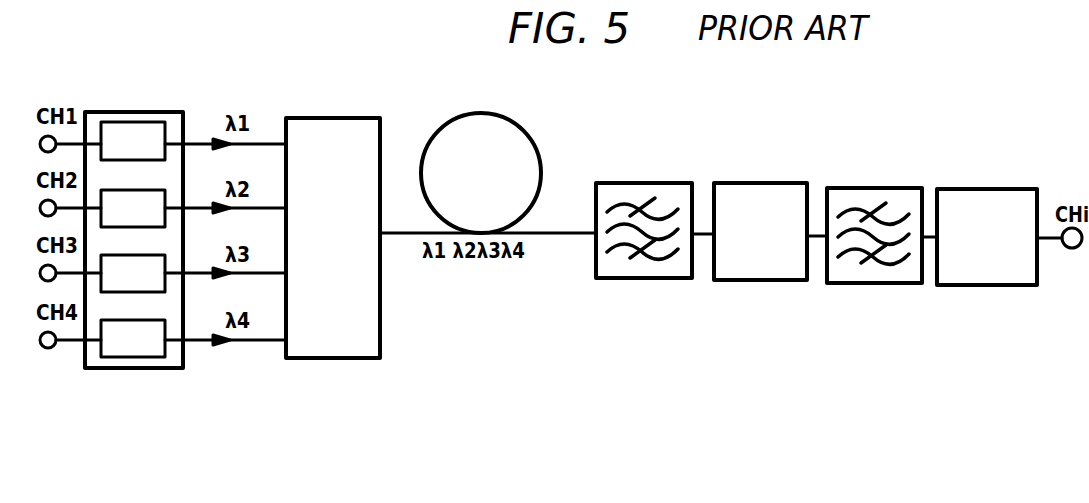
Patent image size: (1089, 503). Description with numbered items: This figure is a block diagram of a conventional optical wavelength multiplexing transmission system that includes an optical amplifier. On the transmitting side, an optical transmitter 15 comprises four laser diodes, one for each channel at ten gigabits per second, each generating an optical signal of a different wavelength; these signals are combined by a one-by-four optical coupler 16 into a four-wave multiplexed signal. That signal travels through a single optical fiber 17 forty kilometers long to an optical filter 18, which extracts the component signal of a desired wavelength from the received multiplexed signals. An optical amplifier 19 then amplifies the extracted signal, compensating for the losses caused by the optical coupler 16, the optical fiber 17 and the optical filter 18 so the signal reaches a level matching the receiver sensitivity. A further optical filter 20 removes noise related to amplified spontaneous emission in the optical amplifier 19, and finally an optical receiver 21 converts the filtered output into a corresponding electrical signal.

The optical transmitter 15 is at (143, 112).
The 1×4 optical coupler 16 is at (346, 118).
The optical fiber 17 is at (521, 125).
The optical filter 18 is at (660, 183).
The optical amplifier 19 is at (772, 183).
The optical filter 20 is at (882, 188).
The optical receiver 21 is at (997, 189).